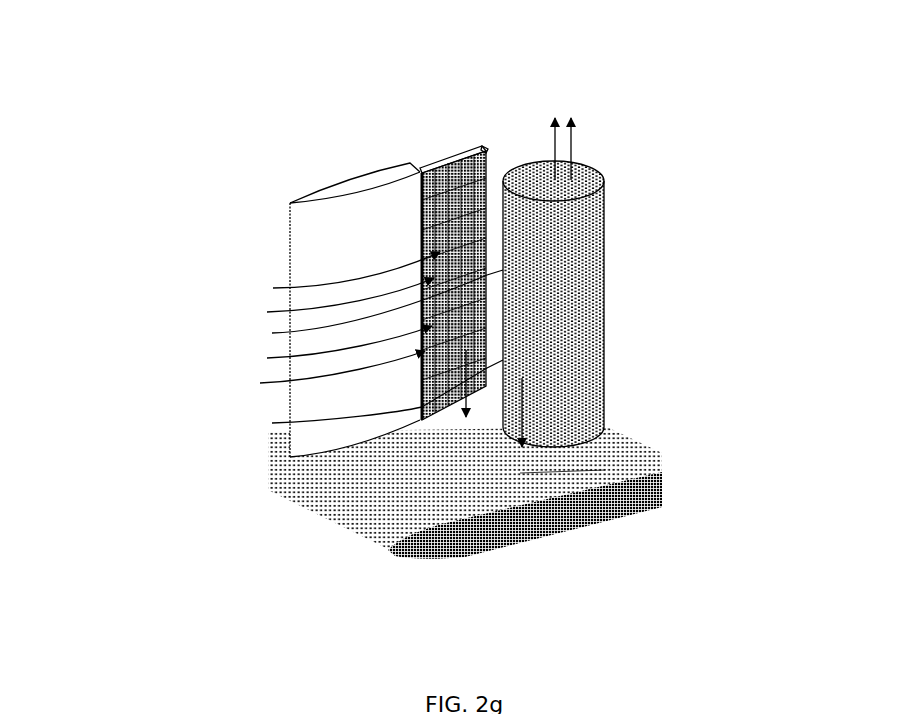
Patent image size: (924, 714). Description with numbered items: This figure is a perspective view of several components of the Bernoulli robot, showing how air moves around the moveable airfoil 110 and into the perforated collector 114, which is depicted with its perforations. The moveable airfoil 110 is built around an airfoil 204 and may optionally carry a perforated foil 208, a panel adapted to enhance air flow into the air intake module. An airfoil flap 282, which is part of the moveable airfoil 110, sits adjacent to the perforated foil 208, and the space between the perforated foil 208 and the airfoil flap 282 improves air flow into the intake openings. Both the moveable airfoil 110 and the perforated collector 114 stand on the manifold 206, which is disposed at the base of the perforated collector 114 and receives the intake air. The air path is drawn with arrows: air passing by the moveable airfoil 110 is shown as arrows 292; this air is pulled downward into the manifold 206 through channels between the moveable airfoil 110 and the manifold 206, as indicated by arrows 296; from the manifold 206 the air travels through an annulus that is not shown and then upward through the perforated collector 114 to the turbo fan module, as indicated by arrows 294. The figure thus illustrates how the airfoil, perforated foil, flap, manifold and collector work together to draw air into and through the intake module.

The moveable airfoil 110 is at (243, 242).
The airfoil 204 is at (340, 216).
The manifold 206 is at (333, 505).
The perforated foil 208 is at (487, 157).
The airfoil flap 282 is at (463, 152).
The arrows indicating air passing by the moveable airfoils 292 is at (365, 337).
The arrows indicating air flow to the turbo fan module 294 is at (565, 135).
The arrows indicating air pulled into the manifold 296 is at (472, 426).
The perforated collector 114 is at (624, 393).